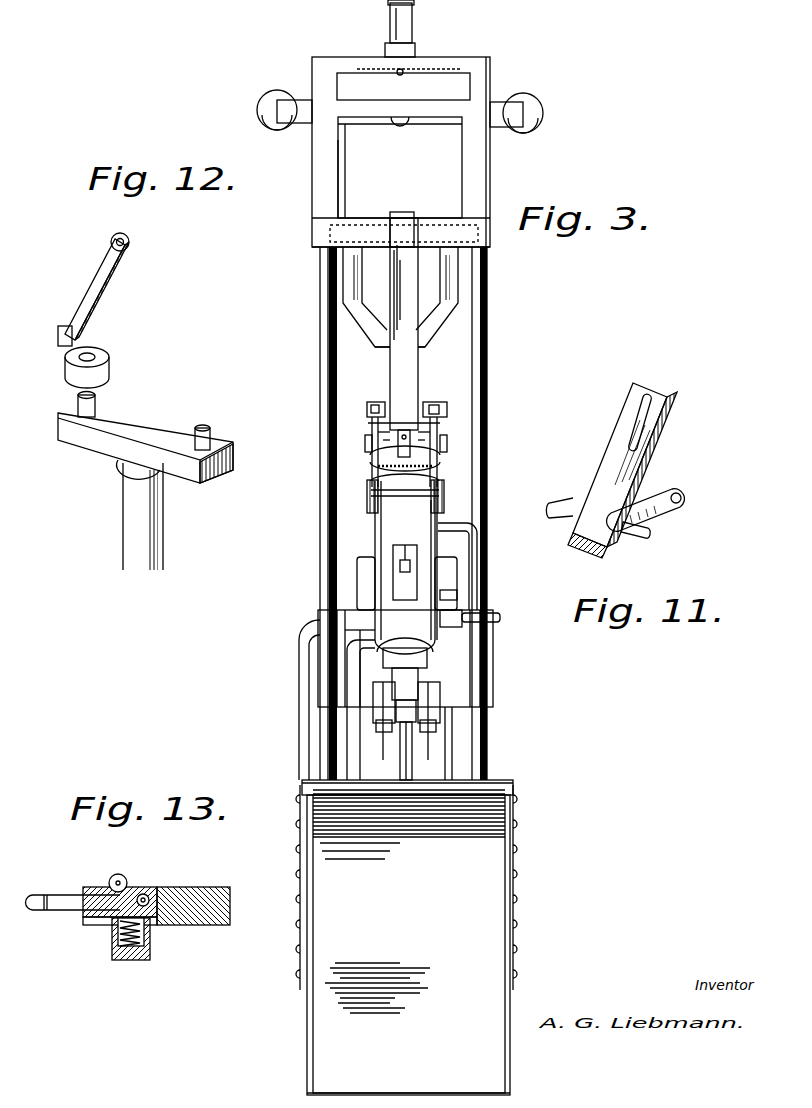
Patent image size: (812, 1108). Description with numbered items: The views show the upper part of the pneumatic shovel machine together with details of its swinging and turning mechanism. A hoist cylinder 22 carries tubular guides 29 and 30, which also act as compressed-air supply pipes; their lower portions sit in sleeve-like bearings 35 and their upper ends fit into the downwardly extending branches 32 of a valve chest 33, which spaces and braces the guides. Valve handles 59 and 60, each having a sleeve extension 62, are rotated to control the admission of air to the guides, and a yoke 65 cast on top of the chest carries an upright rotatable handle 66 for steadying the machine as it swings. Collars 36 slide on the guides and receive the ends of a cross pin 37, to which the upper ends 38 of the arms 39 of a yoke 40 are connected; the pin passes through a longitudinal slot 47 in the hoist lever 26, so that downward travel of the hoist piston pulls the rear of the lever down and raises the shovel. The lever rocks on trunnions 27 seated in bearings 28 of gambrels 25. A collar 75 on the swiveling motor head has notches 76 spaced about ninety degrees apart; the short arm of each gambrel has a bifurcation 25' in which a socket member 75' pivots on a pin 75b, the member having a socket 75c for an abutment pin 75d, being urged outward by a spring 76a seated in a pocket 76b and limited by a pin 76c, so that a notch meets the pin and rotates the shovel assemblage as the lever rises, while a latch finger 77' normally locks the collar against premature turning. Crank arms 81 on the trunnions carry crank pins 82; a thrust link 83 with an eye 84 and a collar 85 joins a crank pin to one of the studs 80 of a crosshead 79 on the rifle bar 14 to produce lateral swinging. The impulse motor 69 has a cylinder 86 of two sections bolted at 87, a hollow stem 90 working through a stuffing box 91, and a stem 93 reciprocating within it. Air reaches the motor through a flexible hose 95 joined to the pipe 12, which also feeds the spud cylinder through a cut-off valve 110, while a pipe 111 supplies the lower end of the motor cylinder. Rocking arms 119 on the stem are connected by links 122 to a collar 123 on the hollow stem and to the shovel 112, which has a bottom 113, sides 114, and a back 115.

In FIG. 3, the rotatable handle 66 is at (404, 26).
In FIG. 3, the yoke 65 is at (436, 70).
In FIG. 3, the valve handle 59 is at (273, 100).
In FIG. 3, the valve handle 60 is at (535, 113).
In FIG. 3, the sleeve extension 62 is at (306, 123).
In FIG. 3, the downwardly extending branches 32 is at (484, 166).
In FIG. 3, the valve chest 33 is at (372, 117).
In FIG. 3, the cross pin 37 is at (494, 206).
In FIG. 3, the collars 36 is at (491, 244).
In FIG. 3, the upper ends of yoke arms 38 is at (428, 232).
In FIG. 3, the arms of yoke 39 is at (456, 282).
In FIG. 3, the yoke 40 is at (420, 325).
In FIG. 3, the tubular guide 29 is at (324, 328).
In FIG. 3, the tubular guide 30 is at (476, 340).
In FIG. 3, the hoist lever 26 is at (404, 382).
In FIG. 11, the hoist lever 26 is at (620, 432).
In FIG. 3, the socket member 75' is at (410, 423).
In FIG. 13, the socket member 75' is at (158, 882).
In FIG. 3, the abutment pin 75d is at (377, 402).
In FIG. 13, the abutment pin 75d is at (67, 911).
In FIG. 3, the socket 75c is at (444, 403).
In FIG. 13, the socket 75c is at (100, 887).
In FIG. 3, the bearings 28 is at (444, 428).
In FIG. 3, the trunnions 27 is at (444, 442).
In FIG. 11, the trunnions 27 is at (646, 536).
In FIG. 3, the springs 76a is at (438, 460).
In FIG. 13, the springs 76a is at (150, 948).
In FIG. 3, the notches 76 is at (438, 482).
In FIG. 3, the collar 75 is at (442, 493).
In FIG. 3, the gambrels 25 is at (474, 560).
In FIG. 3, the flexible hose 95 is at (470, 552).
In FIG. 3, the cylinder of impulse motor 86 is at (400, 505).
In FIG. 3, the latch finger 77' is at (398, 552).
In FIG. 3, the bolted joint 87 is at (402, 575).
In FIG. 3, the impulse motor 69 is at (454, 592).
In FIG. 3, the cut-off valve 110 is at (458, 608).
In FIG. 3, the pipe 12 is at (498, 618).
In FIG. 3, the sleeve-like bearings 35 is at (482, 670).
In FIG. 3, the stuffing box 91 is at (405, 648).
In FIG. 3, the hollow stem 90 is at (410, 678).
In FIG. 3, the links 122 is at (385, 697).
In FIG. 3, the collar 123 is at (441, 718).
In FIG. 3, the rocking arms 119 is at (398, 735).
In FIG. 3, the hoist cylinder 22 is at (455, 743).
In FIG. 3, the pipe 111 is at (360, 672).
In FIG. 3, the back of shovel 115 is at (494, 780).
In FIG. 3, the shovel 112 is at (493, 891).
In FIG. 3, the sides of shovel 114 is at (548, 805).
In FIG. 3, the bottom of shovel 113 is at (484, 962).
In FIG. 3, the piston stem 93 is at (412, 785).
In FIG. 11, the slot 47 is at (656, 416).
In FIG. 11, the crank arms 81 is at (648, 492).
In FIG. 11, the crank pin 82 is at (682, 497).
In FIG. 12, the thrust link 83 is at (100, 294).
In FIG. 12, the eye 84 is at (130, 243).
In FIG. 12, the collar 85 is at (110, 366).
In FIG. 12, the crosshead 79 is at (140, 430).
In FIG. 12, the studs 80 is at (78, 402).
In FIG. 12, the rifle bar 14 is at (135, 530).
In FIG. 13, the pivot pin 75b is at (168, 887).
In FIG. 13, the bifurcation 25' is at (108, 961).
In FIG. 13, the pins 76c is at (120, 876).
In FIG. 13, the pockets 76b is at (125, 960).